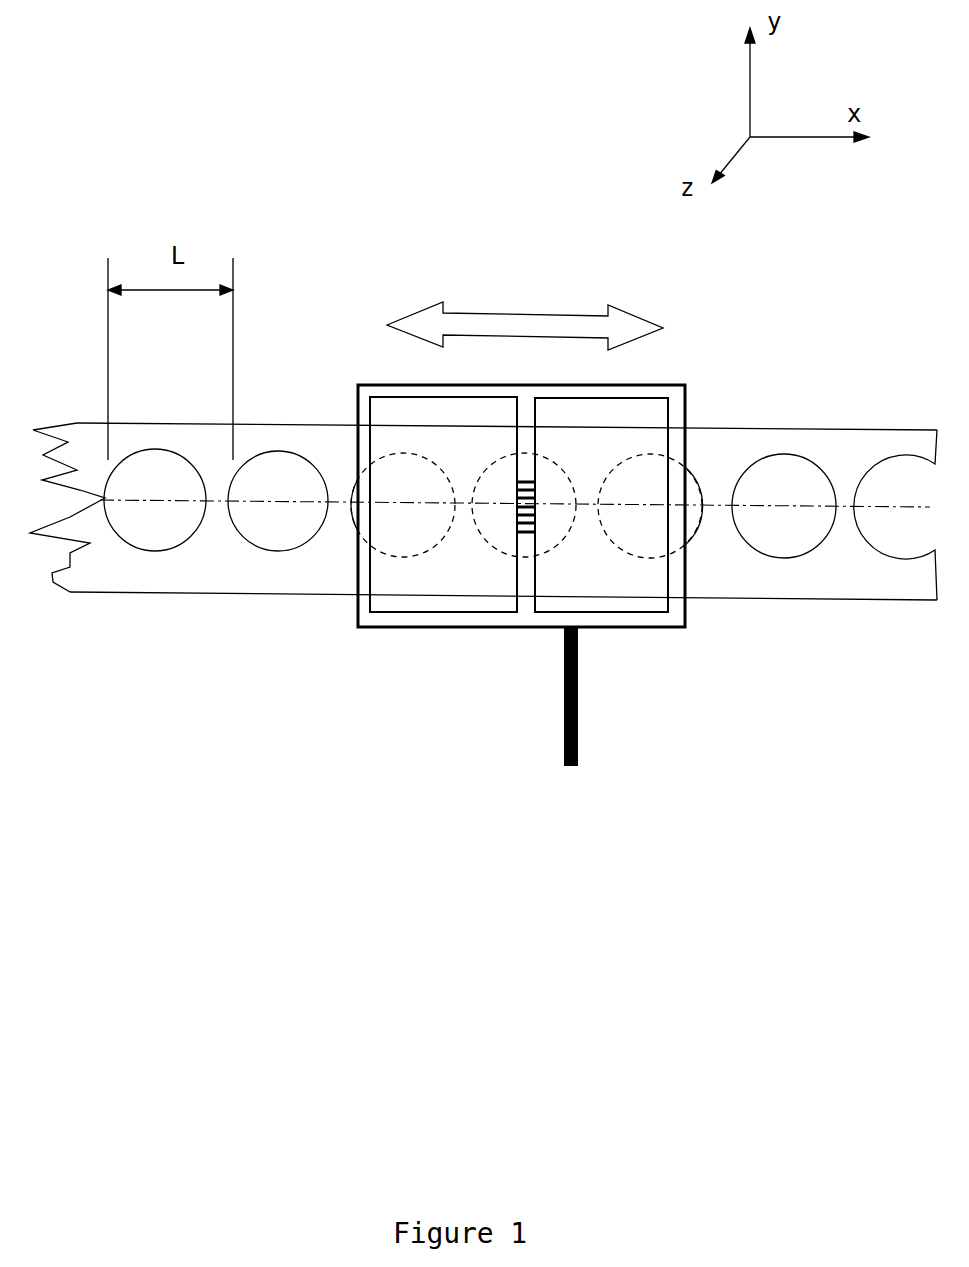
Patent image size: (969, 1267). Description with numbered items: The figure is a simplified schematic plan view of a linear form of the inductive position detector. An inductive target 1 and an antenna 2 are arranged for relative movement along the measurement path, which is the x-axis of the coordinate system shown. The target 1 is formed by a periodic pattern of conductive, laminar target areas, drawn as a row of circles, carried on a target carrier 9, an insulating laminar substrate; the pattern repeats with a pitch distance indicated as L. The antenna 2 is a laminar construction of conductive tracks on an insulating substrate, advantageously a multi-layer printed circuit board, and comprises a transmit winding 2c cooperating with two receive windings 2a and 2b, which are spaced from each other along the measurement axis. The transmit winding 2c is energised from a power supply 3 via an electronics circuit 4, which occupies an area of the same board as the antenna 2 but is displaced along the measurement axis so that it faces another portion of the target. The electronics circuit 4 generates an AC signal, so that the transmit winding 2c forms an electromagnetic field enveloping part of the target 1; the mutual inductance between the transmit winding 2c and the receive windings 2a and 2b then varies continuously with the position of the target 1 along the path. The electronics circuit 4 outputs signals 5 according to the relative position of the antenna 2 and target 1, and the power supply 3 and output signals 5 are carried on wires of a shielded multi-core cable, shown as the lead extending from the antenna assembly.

The inductive target 1 is at (148, 553).
The antenna 2 is at (457, 767).
The receive winding 2a is at (403, 505).
The receive winding 2b is at (524, 505).
The transmit winding 2c is at (650, 506).
The power supply 3 is at (588, 856).
The electronics circuit 4 is at (572, 596).
The output signals 5 is at (571, 766).
The target carrier 9 is at (843, 577).